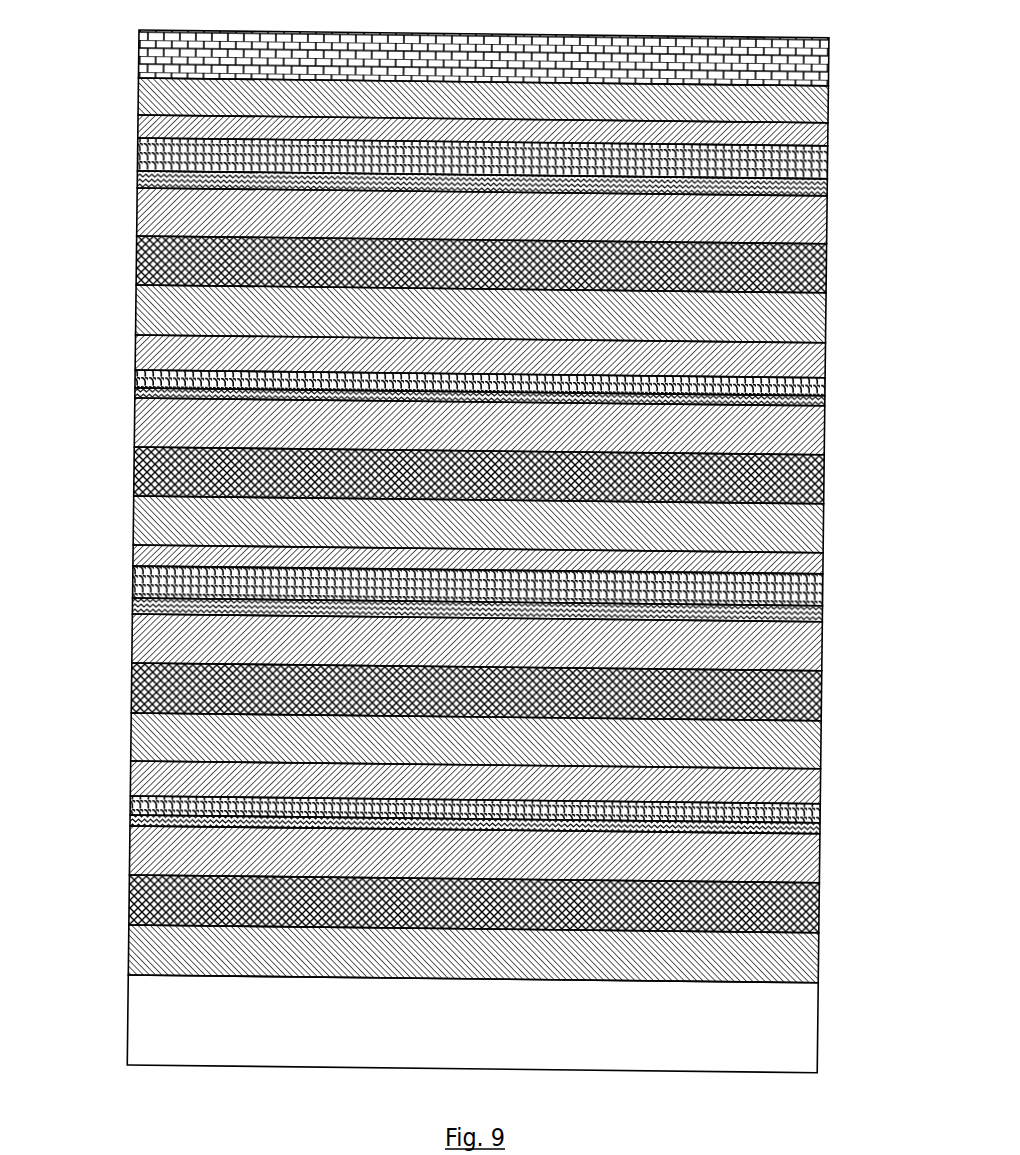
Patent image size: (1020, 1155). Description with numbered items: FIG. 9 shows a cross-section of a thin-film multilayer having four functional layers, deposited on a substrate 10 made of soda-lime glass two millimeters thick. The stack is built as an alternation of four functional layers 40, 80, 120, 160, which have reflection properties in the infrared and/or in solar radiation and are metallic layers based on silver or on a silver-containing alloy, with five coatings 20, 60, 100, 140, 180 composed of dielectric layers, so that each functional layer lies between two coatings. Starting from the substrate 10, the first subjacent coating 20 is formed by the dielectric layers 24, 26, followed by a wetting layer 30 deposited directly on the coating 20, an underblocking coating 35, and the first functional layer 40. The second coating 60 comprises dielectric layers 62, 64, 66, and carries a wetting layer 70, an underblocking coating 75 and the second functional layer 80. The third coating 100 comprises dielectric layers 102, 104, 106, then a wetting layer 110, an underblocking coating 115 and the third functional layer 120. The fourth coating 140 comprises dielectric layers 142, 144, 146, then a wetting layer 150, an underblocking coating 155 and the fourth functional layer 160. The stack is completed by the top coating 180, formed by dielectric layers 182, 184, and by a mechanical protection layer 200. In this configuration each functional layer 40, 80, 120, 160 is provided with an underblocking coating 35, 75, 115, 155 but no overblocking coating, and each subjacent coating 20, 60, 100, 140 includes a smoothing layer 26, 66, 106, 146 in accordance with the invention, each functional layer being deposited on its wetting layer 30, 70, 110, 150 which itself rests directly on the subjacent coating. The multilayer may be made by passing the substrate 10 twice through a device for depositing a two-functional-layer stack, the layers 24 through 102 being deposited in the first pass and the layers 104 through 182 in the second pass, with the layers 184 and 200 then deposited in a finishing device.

The substrate 10 is at (479, 1005).
The subjacent coating 20 is at (465, 931).
The dielectric layer 24 is at (146, 942).
The smoothing layer 26 is at (146, 896).
The wetting layer 30 is at (146, 848).
The underblocking coating 35 is at (140, 812).
The functional layer 40 is at (811, 796).
The subjacent coating 60 is at (466, 733).
The dielectric layer 62 is at (143, 769).
The dielectric layer 64 is at (146, 729).
The smoothing layer 66 is at (146, 680).
The wetting layer 70 is at (146, 632).
The underblocking coating 75 is at (140, 598).
The functional layer 80 is at (814, 582).
The subjacent coating 100 is at (475, 511).
The dielectric layer 102 is at (140, 552).
The dielectric layer 104 is at (146, 518).
The smoothing layer 106 is at (146, 467).
The wetting layer 110 is at (146, 422).
The underblocking coating 115 is at (140, 385).
The functional layer 120 is at (818, 370).
The subjacent coating 140 is at (475, 307).
The dielectric layer 142 is at (143, 342).
The dielectric layer 144 is at (146, 302).
The smoothing layer 146 is at (146, 250).
The wetting layer 150 is at (146, 206).
The underblocking coating 155 is at (140, 172).
The functional layer 160 is at (820, 152).
The coating 180 is at (475, 110).
The dielectric layer 182 is at (140, 120).
The dielectric layer 184 is at (146, 84).
The mechanical protection layer 200 is at (143, 52).